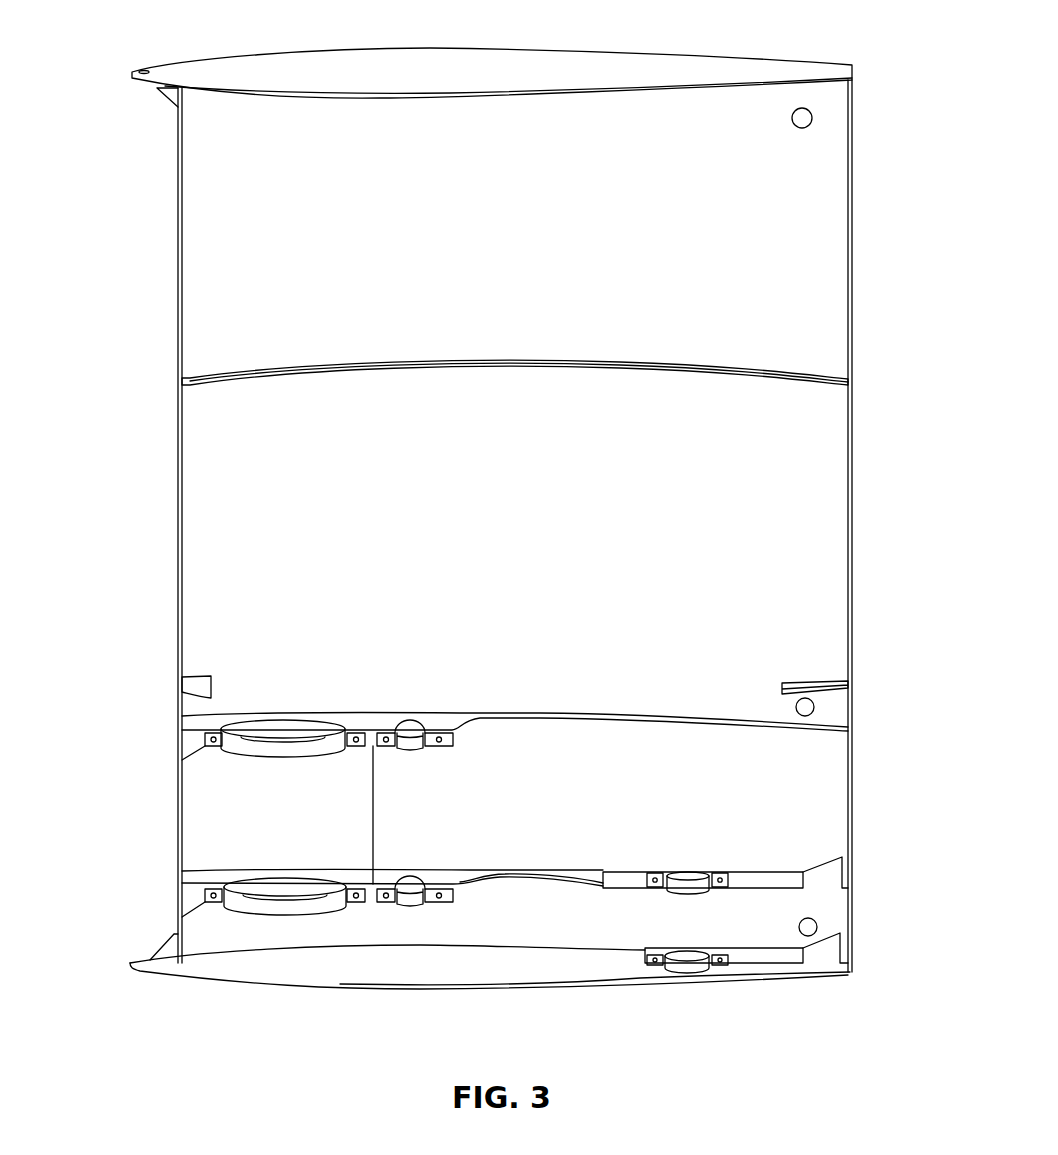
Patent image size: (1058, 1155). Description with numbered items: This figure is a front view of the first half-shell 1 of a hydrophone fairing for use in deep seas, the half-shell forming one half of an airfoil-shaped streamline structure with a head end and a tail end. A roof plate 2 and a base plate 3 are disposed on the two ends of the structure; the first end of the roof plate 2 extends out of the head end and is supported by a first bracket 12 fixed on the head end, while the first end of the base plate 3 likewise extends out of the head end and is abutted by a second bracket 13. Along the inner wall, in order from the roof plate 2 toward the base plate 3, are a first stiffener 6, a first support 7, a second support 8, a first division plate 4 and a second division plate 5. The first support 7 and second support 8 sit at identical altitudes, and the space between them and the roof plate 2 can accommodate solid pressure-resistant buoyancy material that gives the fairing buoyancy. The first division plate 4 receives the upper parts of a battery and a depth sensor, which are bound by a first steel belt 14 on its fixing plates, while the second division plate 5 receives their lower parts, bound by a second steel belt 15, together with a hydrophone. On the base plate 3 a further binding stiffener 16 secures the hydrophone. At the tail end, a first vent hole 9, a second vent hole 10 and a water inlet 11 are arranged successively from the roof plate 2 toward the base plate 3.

The first half-shell 1 is at (212, 243).
The roof plate 2 is at (200, 70).
The base plate 3 is at (232, 972).
The first division plate 4 is at (200, 722).
The second division plate 5 is at (200, 883).
The first stiffener 6 is at (190, 380).
The first support 7 is at (190, 680).
The second support 8 is at (815, 683).
The first vent hole 9 is at (812, 116).
The second vent hole 10 is at (814, 710).
The water inlet 11 is at (817, 925).
The first bracket 12 is at (163, 97).
The second bracket 13 is at (164, 952).
The first steel belt 14 is at (262, 746).
The second steel belt 15 is at (372, 746).
The first stiffener 16 is at (690, 876).